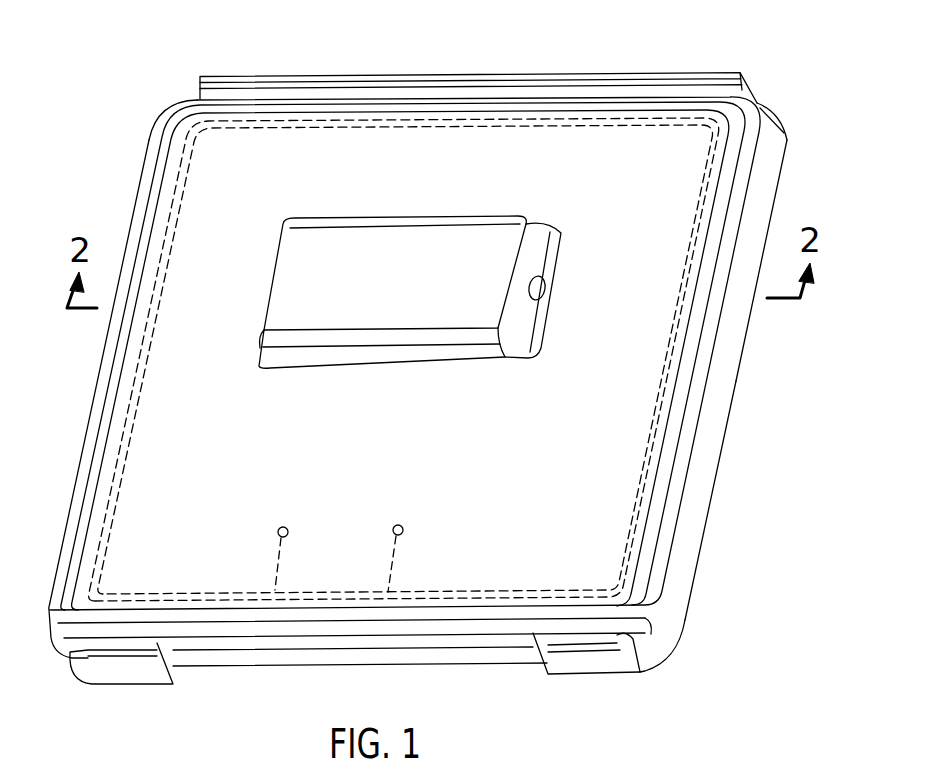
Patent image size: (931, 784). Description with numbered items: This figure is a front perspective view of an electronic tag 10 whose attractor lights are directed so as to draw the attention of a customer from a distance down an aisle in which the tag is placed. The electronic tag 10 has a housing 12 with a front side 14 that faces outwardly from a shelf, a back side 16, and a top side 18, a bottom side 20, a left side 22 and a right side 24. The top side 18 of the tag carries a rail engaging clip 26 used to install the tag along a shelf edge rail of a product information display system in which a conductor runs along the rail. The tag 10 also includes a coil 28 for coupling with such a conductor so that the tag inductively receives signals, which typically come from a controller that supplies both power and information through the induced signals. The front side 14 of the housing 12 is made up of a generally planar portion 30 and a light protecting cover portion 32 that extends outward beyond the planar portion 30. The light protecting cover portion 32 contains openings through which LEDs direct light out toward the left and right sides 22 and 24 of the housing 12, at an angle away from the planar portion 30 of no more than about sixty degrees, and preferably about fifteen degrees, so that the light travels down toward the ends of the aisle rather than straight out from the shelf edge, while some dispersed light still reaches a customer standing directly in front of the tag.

The electronic tag 10 is at (779, 107).
The housing 12 is at (670, 638).
The front side 14 is at (628, 462).
The back side 16 is at (700, 557).
The top side 18 is at (193, 101).
The bottom side 20 is at (243, 654).
The left side 22 is at (92, 390).
The right side 24 is at (730, 372).
The rail engaging clip 26 is at (565, 72).
The coil 28 is at (690, 222).
The planar portion 30 is at (364, 453).
The light protecting cover portion 32 is at (423, 247).